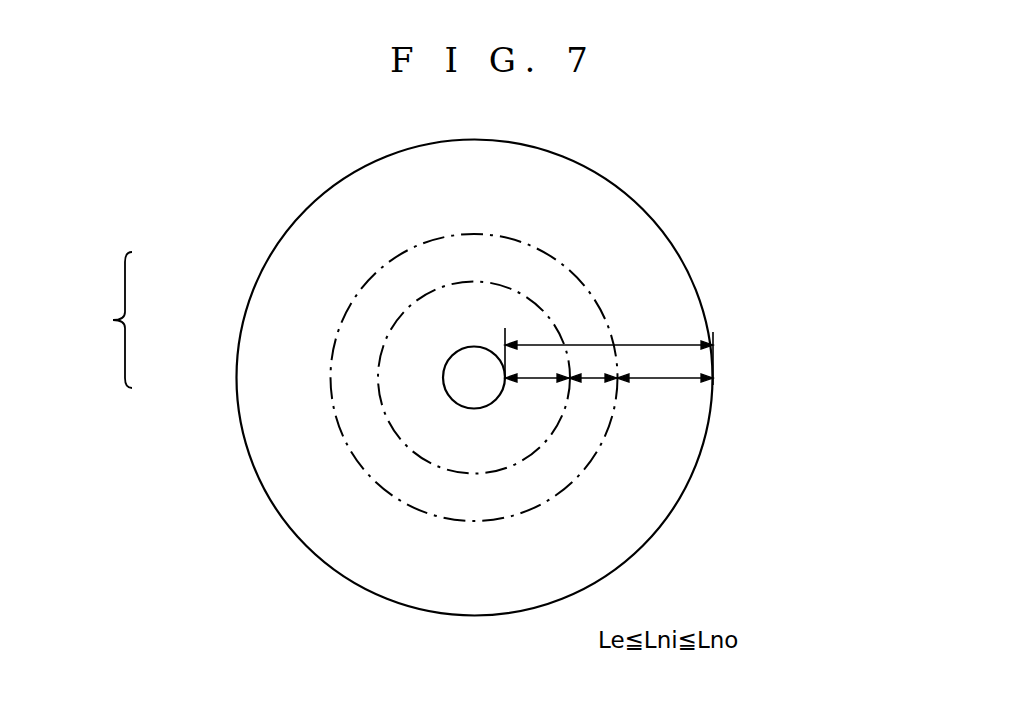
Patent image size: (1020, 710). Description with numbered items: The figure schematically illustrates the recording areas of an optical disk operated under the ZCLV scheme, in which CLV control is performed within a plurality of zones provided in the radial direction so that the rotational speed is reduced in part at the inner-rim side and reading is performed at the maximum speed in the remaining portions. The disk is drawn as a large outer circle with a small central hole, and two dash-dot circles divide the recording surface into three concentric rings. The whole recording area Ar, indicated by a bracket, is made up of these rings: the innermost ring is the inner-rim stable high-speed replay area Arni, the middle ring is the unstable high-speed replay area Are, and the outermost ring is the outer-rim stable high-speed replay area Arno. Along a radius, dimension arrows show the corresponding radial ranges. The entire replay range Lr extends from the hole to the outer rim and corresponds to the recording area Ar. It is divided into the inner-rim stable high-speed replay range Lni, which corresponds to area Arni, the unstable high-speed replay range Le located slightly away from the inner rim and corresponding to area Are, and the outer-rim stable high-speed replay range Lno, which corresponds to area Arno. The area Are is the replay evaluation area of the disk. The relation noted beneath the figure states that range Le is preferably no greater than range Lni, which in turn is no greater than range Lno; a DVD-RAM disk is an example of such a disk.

The ZCLV scheme ZCLV is at (507, 378).
The recording area Ar is at (104, 320).
The outer-rim stable high-speed replay area Arno is at (300, 312).
The unstable high-speed replay area Are is at (357, 360).
The inner-rim stable high-speed replay area Arni is at (420, 417).
The entire replay range Lr is at (609, 351).
The inner-rim stable high-speed replay range Lni is at (537, 395).
The unstable high-speed replay range Le is at (593, 395).
The outer-rim stable high-speed replay range Lno is at (665, 395).